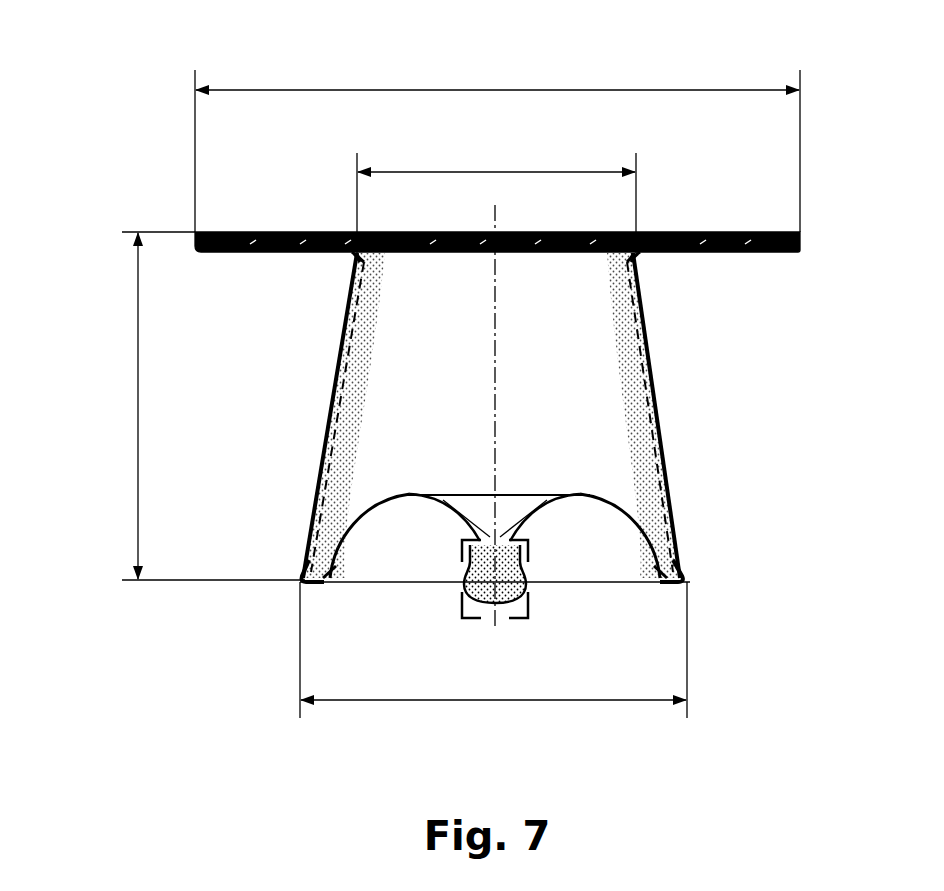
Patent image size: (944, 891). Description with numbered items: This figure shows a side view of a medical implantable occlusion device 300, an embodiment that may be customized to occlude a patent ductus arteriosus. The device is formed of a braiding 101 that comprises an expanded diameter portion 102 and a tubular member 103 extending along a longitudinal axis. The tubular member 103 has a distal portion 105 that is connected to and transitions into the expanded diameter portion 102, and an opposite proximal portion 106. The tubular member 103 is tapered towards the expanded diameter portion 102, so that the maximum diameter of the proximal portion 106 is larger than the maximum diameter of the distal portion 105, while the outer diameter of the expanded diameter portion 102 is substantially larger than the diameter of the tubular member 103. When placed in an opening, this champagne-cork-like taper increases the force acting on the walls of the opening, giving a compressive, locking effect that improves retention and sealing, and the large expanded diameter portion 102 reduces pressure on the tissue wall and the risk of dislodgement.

The medical occlusion device 300 is at (457, 359).
The expanded diameter portion 102 is at (760, 253).
The tubular member 103 is at (653, 396).
The distal portion 105 is at (646, 264).
The braiding 101 is at (665, 505).
The proximal portion 106 is at (700, 578).